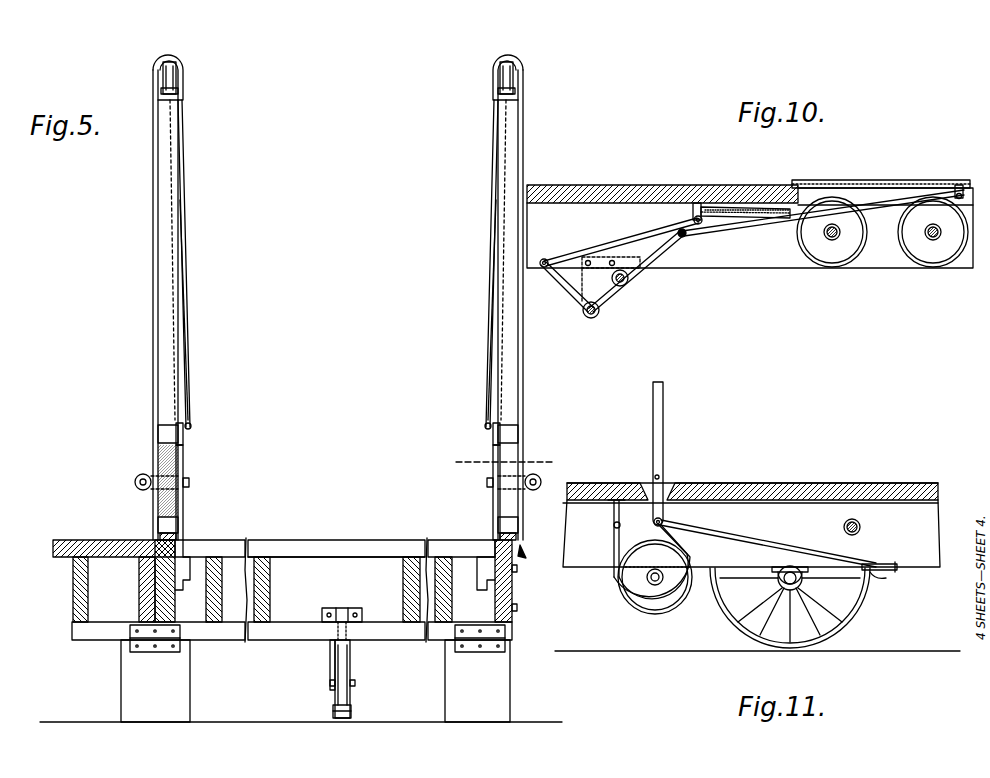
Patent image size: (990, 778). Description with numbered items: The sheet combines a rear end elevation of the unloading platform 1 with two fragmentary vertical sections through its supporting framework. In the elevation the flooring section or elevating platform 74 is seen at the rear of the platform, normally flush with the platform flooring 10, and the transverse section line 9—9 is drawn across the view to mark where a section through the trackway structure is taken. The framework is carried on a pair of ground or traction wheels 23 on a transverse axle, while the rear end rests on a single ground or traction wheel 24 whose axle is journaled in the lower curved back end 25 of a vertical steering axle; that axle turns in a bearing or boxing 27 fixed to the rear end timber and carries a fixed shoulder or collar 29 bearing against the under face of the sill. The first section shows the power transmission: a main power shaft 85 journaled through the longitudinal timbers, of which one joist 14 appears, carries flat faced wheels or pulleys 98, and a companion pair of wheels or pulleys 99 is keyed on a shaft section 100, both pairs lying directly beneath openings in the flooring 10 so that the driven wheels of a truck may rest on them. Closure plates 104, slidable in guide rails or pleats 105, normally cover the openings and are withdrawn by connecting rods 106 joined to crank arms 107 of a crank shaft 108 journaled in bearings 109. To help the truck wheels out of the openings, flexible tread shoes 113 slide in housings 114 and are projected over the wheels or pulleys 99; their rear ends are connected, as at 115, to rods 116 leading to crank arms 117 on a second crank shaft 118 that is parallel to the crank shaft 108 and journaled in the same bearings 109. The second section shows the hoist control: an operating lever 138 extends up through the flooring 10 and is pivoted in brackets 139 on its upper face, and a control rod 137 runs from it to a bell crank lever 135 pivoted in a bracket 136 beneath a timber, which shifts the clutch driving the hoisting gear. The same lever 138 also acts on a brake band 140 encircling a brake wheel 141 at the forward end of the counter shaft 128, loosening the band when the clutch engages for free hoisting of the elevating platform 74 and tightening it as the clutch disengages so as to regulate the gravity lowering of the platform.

In FIG. 5, the platform 1 is at (289, 588).
In FIG. 5, the section line 9— 9 is at (502, 462).
In FIG. 10, the platform flooring 10 is at (640, 185).
In FIG. 11, the platform flooring 10 is at (785, 483).
In FIG. 10, the timber or joist 14 is at (780, 268).
In FIG. 11, the timber or joist 14 is at (751, 533).
In FIG. 11, the ground or traction wheels 23 is at (858, 600).
In FIG. 5, the ground or traction wheel 24 is at (352, 704).
In FIG. 5, the lower curved back end 25 is at (352, 666).
In FIG. 5, the bearing or boxing 27 is at (345, 610).
In FIG. 5, the fixed shoulder or collar 29 is at (329, 645).
In FIG. 5, the flooring section or elevating platform 74 is at (368, 543).
In FIG. 10, the main power shaft 85 is at (942, 232).
In FIG. 10, the wheels or pulleys 98 is at (938, 258).
In FIG. 10, the wheels or pulleys 99 is at (838, 258).
In FIG. 10, the shaft section 100 is at (842, 236).
In FIG. 10, the closure plates 104 is at (910, 182).
In FIG. 10, the guide rails or pleats 105 is at (845, 181).
In FIG. 10, the connecting rods 106 is at (745, 249).
In FIG. 10, the crank arms 107 is at (660, 262).
In FIG. 10, the crank shaft 108 is at (628, 286).
In FIG. 10, the bearings 109 is at (605, 306).
In FIG. 10, the flexible tread elements or shoes 113 is at (760, 208).
In FIG. 10, the casings or housings 114 is at (748, 208).
In FIG. 10, the connection 115 is at (695, 214).
In FIG. 10, the rods 116 is at (630, 242).
In FIG. 10, the crank arms 117 is at (566, 284).
In FIG. 10, the crank shaft 118 is at (588, 317).
In FIG. 11, the counter shaft 128 is at (648, 580).
In FIG. 11, the bell crank lever 135 is at (880, 563).
In FIG. 11, the bracket 136 is at (886, 577).
In FIG. 11, the control rod 137 is at (770, 546).
In FIG. 11, the operating lever 138 is at (664, 433).
In FIG. 11, the brackets 139 is at (662, 479).
In FIG. 11, the brake band 140 is at (613, 577).
In FIG. 11, the brake wheel 141 is at (648, 600).